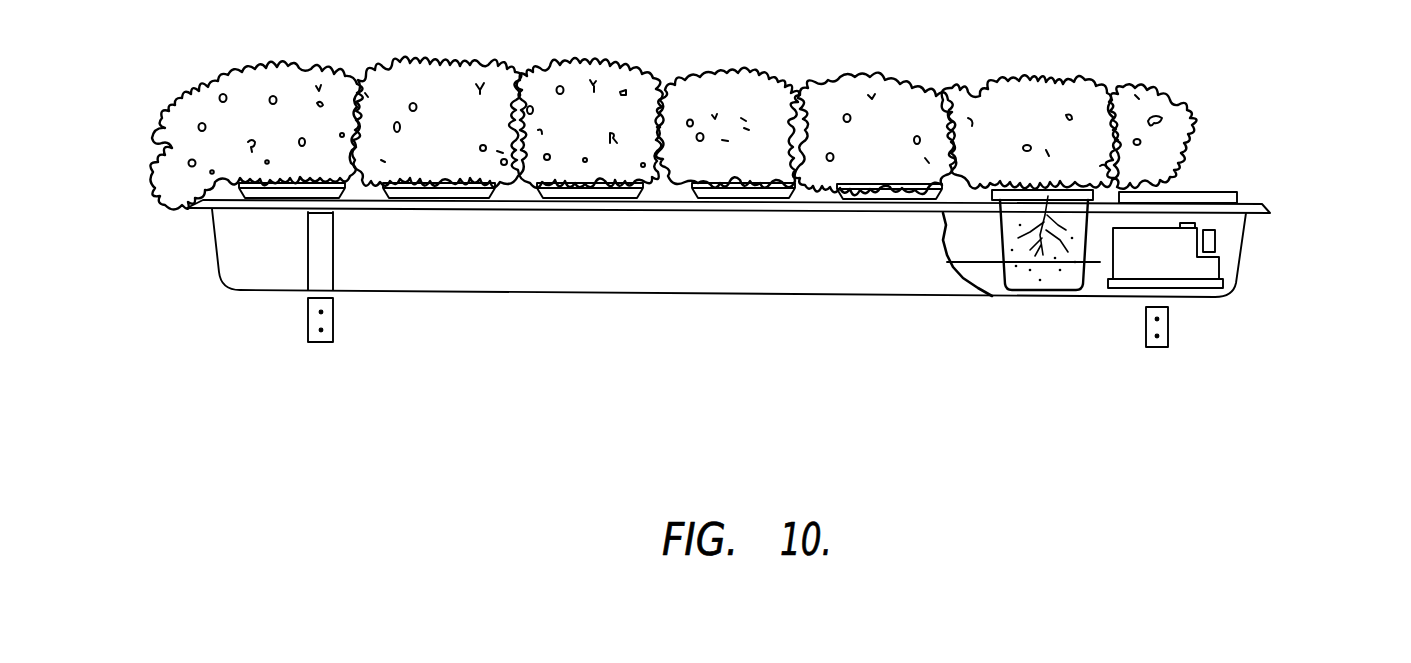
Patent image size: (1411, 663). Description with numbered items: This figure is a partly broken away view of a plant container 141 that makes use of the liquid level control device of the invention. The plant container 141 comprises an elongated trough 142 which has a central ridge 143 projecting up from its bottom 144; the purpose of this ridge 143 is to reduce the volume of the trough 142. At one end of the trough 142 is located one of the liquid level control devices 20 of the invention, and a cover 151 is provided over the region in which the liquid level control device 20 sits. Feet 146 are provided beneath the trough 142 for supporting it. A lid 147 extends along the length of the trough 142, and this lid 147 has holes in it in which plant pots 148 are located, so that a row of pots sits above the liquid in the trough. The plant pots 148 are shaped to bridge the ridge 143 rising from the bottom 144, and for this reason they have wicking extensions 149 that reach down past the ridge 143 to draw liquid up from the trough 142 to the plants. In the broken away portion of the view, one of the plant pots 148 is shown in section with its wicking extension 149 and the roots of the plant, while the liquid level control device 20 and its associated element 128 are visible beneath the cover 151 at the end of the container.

The plant container 141 is at (1268, 85).
The trough 142 is at (872, 278).
The central ridge 143 is at (983, 275).
The bottom 144 is at (1036, 297).
The feet 146 is at (334, 329).
The lid 147 is at (833, 204).
The plant pots 148 is at (1088, 263).
The wicking extensions 149 is at (1032, 278).
The cover 151 is at (1203, 190).
The float switch 128 is at (1217, 247).
The liquid level control device 20 is at (1213, 267).